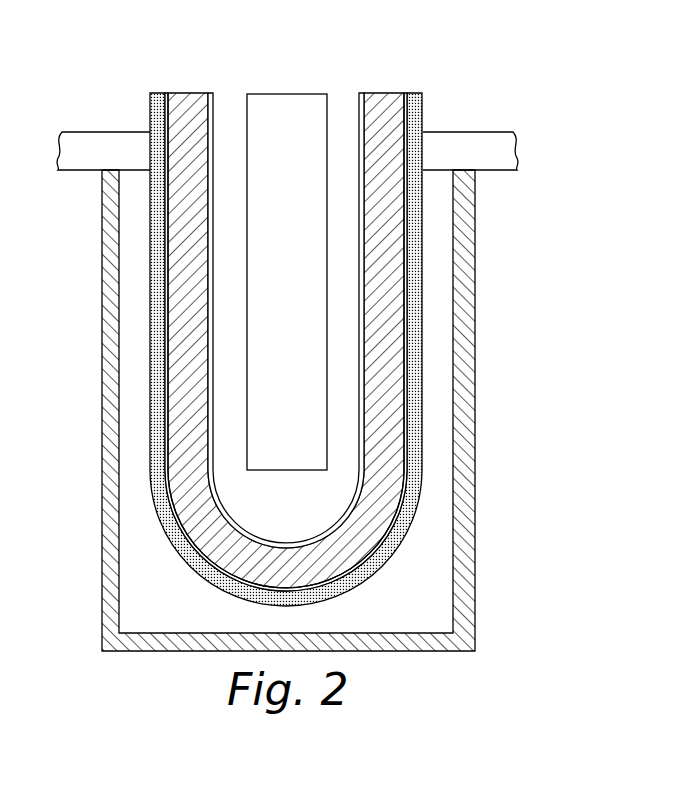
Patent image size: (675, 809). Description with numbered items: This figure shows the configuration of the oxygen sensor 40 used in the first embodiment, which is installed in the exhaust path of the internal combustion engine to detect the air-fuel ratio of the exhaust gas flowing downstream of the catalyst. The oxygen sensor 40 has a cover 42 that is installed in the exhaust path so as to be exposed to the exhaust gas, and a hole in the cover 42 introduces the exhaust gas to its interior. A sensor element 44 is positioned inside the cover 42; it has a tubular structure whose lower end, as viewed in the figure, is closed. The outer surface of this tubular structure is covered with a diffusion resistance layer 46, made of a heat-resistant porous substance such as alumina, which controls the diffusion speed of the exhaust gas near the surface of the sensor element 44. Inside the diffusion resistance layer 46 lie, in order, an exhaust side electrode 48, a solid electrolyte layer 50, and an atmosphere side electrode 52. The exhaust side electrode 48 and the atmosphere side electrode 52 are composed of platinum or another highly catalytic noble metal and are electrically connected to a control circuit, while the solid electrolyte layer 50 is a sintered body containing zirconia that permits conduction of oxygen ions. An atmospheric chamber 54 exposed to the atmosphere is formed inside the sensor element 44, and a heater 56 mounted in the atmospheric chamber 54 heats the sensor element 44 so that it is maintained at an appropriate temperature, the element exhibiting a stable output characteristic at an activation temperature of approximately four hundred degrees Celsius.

The oxygen sensor 40 is at (316, 391).
The cover 42 is at (469, 525).
The sensor element 44 is at (289, 359).
The diffusion resistance layer 46 is at (397, 545).
The exhaust side electrode 48 is at (200, 555).
The solid electrolyte layer 50 is at (250, 568).
The atmosphere side electrode 52 is at (290, 545).
The atmospheric chamber 54 is at (289, 332).
The heater 56 is at (307, 110).